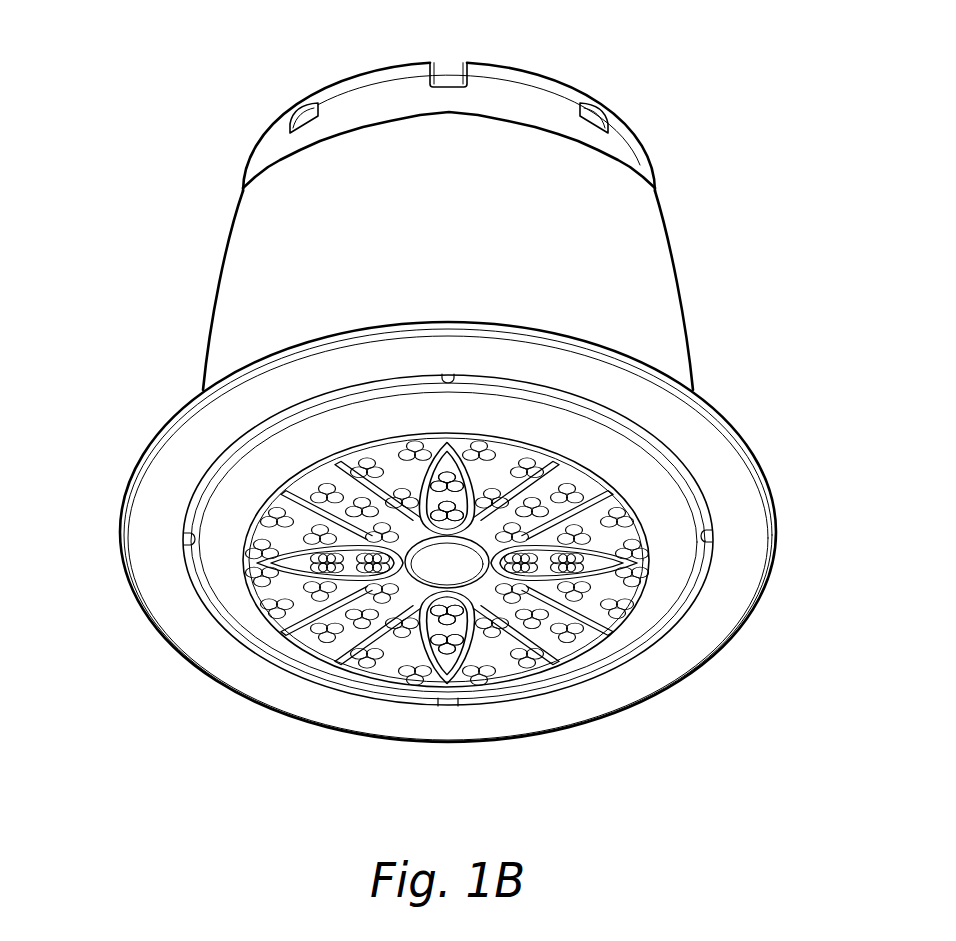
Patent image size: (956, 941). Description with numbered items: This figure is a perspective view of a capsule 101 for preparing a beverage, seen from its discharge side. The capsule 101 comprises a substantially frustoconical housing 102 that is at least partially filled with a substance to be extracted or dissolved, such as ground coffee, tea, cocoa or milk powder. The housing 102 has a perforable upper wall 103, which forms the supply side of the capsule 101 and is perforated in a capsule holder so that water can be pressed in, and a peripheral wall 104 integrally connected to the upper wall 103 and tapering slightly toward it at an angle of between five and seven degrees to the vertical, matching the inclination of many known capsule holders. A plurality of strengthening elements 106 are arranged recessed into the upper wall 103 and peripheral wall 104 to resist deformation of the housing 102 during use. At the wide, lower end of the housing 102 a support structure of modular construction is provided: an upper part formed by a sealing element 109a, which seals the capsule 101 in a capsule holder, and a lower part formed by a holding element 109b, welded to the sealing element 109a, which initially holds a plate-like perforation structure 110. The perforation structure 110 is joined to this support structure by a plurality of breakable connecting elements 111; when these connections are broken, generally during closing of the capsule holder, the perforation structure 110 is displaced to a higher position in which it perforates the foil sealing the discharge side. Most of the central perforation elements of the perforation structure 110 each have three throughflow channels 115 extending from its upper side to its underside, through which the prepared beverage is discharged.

The capsule 101 is at (423, 412).
The housing 102 is at (460, 205).
The upper wall 103 is at (270, 148).
The peripheral wall 104 is at (655, 295).
The strengthening elements 106 is at (316, 101).
The sealing element 109a is at (158, 437).
The holding element 109b is at (160, 597).
The perforation structure 110 is at (258, 615).
The breakable connecting elements 111 is at (187, 537).
The throughflow channels 115 is at (387, 665).